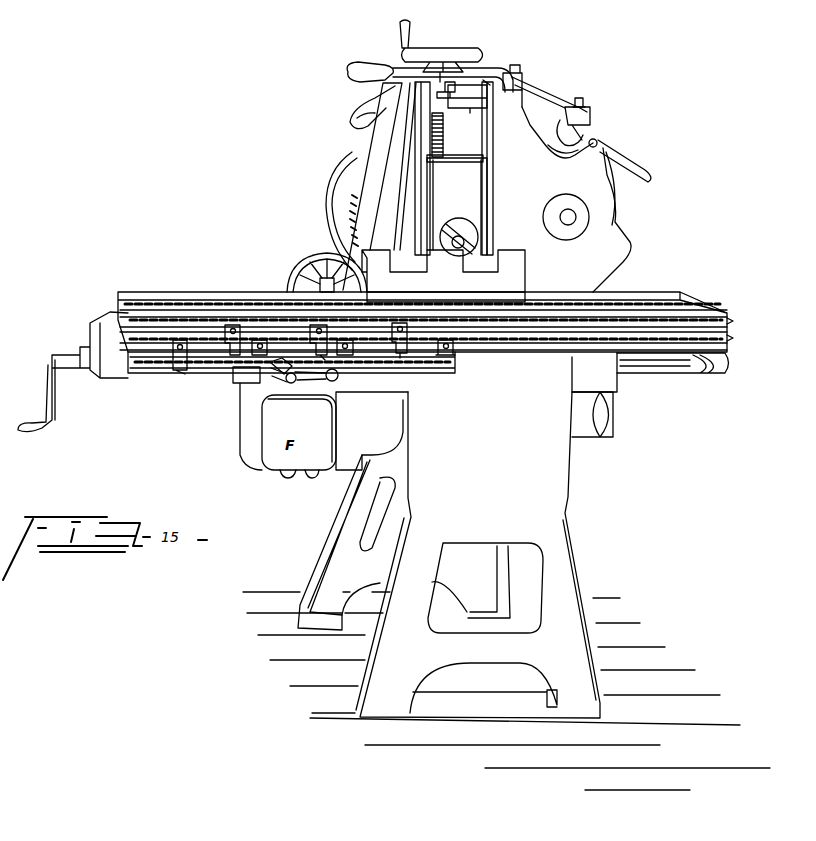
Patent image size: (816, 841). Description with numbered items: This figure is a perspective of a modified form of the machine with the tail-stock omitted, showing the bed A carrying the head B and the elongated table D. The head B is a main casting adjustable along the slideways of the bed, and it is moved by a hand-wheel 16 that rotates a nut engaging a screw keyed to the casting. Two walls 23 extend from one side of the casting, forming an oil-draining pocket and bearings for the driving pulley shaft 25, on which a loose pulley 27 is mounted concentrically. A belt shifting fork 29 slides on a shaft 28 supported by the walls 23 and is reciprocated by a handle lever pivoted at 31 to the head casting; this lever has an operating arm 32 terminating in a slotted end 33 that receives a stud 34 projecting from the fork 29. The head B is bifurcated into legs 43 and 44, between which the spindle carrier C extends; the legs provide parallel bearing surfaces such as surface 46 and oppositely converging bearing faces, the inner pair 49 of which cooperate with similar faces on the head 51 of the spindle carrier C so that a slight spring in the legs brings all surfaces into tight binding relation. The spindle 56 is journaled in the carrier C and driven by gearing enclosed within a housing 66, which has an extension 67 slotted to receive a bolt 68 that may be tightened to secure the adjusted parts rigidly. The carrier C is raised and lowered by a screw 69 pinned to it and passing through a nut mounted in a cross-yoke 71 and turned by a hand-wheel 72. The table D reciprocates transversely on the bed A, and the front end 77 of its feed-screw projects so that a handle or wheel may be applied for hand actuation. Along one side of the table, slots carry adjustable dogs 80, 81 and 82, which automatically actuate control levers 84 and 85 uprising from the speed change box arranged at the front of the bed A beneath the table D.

The hand-wheel 16 is at (315, 260).
The walls 23 is at (566, 207).
The driving pulley shaft 25 is at (574, 224).
The loose pulley 27 is at (615, 212).
The shaft 28 is at (598, 143).
The belt shifting fork 29 is at (620, 165).
The pivot 31 is at (518, 70).
The operating arm 32 is at (560, 97).
The slotted end 33 is at (590, 114).
The stud 34 is at (583, 104).
The leg 43 is at (485, 87).
The leg 44 is at (408, 80).
The bearing surface 46 is at (481, 148).
The inner pair of bearing faces 49 is at (426, 130).
The head of the spindle carrier 51 is at (488, 176).
The spindle 56 is at (460, 223).
The housing 66 is at (349, 186).
The extension 67 is at (380, 96).
The bolt 68 is at (728, 348).
The screw 69 is at (730, 325).
The cross-yoke 71 is at (470, 110).
The hand-wheel 72 is at (437, 50).
The front end of the feed screw 77 is at (82, 352).
The dog 80 is at (400, 358).
The dog 81 is at (446, 358).
The dog 82 is at (360, 358).
The control lever 84 is at (330, 382).
The control lever 85 is at (290, 384).
The bed A is at (455, 555).
The head B is at (508, 220).
The spindle carrier C is at (457, 190).
The table D is at (653, 298).